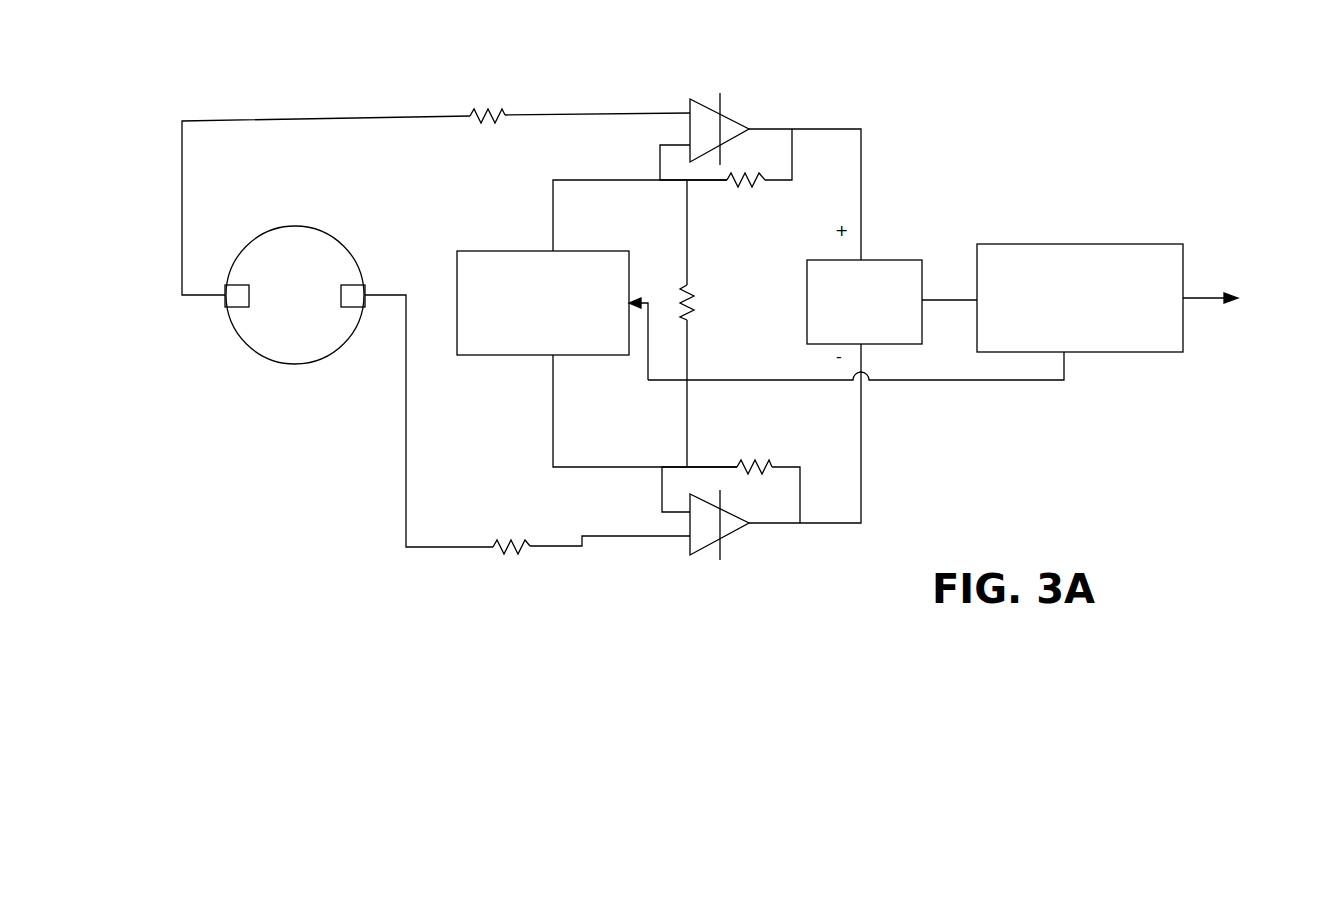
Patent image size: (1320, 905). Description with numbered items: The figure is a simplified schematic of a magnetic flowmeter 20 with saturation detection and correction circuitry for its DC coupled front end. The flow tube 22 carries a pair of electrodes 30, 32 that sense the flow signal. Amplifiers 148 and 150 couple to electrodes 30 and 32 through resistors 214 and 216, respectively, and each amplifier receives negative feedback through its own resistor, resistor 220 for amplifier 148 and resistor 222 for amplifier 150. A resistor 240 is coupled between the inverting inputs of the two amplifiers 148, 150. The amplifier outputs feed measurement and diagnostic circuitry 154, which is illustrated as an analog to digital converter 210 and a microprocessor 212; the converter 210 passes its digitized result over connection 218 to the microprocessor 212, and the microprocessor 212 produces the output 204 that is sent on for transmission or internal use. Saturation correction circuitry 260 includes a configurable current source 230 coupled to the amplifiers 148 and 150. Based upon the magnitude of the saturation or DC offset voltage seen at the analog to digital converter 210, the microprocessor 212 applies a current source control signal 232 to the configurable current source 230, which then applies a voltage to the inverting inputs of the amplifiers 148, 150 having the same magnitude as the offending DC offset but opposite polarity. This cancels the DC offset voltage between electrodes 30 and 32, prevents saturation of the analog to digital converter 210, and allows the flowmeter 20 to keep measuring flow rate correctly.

The magnetic flowmeter 20 is at (870, 86).
The sensor / substrate 22 is at (277, 226).
The electrode 30 is at (235, 307).
The electrode 32 is at (352, 307).
The amplifier 148 is at (730, 114).
The amplifier 150 is at (728, 523).
The measurement and diagnostic circuitry 154 is at (1080, 174).
The output 204 is at (1205, 297).
The analog to digital converter 210 is at (817, 300).
The microprocessor 212 is at (1080, 244).
The resistor 214 is at (506, 116).
The resistor 216 is at (530, 545).
The ADC output line 218 is at (942, 297).
The resistor 220 is at (766, 181).
The resistor 222 is at (772, 467).
The configurable current source 230 is at (510, 251).
The current source control signal 232 is at (897, 383).
The resistor 240 is at (693, 320).
The saturation correction circuitry 260 is at (358, 461).